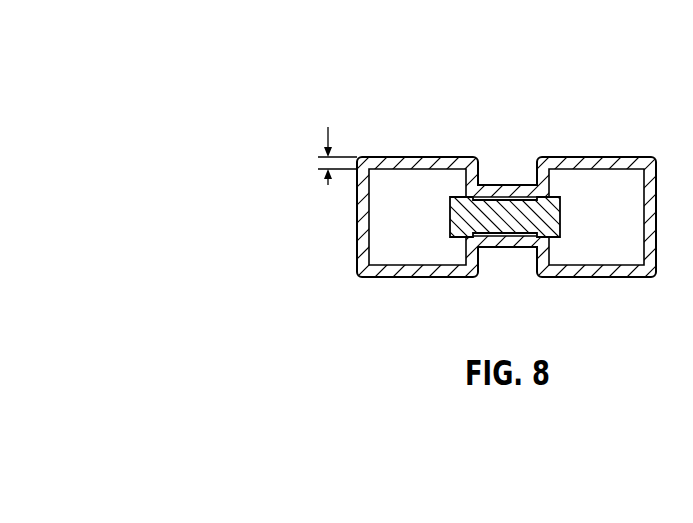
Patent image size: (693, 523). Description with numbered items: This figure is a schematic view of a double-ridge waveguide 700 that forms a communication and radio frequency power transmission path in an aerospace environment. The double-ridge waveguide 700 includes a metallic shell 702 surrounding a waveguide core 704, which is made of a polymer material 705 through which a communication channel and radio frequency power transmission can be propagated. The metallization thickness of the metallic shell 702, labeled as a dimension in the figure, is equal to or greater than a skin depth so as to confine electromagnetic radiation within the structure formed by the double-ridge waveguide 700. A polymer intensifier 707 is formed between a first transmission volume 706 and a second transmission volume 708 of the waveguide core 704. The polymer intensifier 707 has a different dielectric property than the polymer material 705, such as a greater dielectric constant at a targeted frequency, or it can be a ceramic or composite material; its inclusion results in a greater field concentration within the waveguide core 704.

The double-ridge waveguide 700 is at (335, 56).
The metallic shell 702 is at (411, 160).
The waveguide core 704 is at (389, 252).
The polymer material 705 is at (625, 255).
The first transmission volume 706 is at (448, 252).
The polymer intensifier 707 is at (528, 212).
The second transmission volume 708 is at (583, 245).